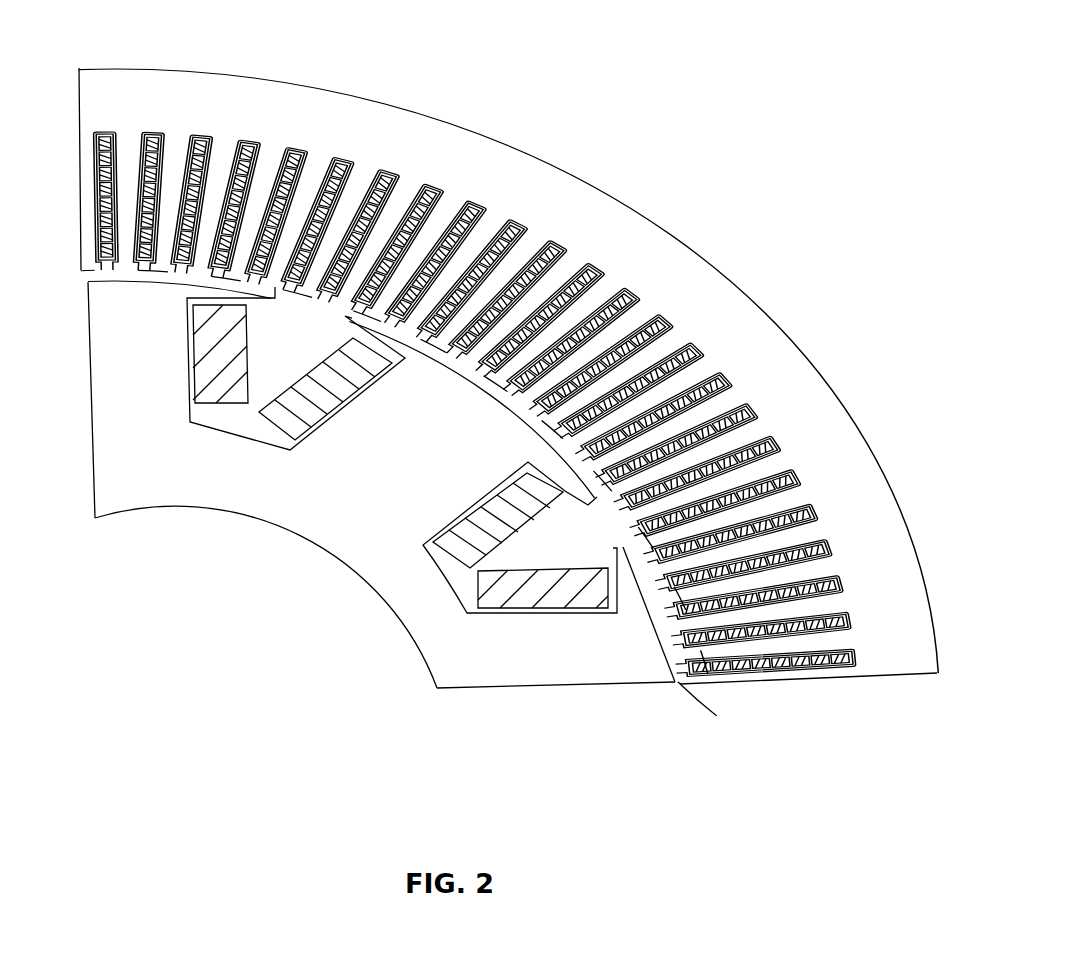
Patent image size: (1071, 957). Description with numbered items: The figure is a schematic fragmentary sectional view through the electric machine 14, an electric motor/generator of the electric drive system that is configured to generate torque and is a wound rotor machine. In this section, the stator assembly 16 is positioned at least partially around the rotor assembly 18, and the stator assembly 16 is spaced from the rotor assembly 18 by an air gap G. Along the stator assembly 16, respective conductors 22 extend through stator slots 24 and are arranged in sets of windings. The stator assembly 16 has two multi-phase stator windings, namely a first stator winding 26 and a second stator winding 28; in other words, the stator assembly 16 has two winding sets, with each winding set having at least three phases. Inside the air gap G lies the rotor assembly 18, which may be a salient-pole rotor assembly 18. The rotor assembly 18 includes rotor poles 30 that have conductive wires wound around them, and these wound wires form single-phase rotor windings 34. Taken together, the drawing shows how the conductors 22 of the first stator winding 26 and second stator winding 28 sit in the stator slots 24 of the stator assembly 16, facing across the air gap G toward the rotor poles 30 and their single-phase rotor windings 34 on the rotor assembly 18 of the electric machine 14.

The electric machine 14 is at (684, 44).
The stator assembly 16 is at (74, 70).
The rotor assembly 18 is at (78, 285).
The air gap G is at (76, 282).
The conductors 22 is at (316, 225).
The stator slots 24 is at (395, 250).
The first stator winding 26 is at (732, 665).
The second stator winding 28 is at (811, 661).
The rotor poles 30 is at (218, 405).
The single-phase rotor windings 34 is at (283, 415).